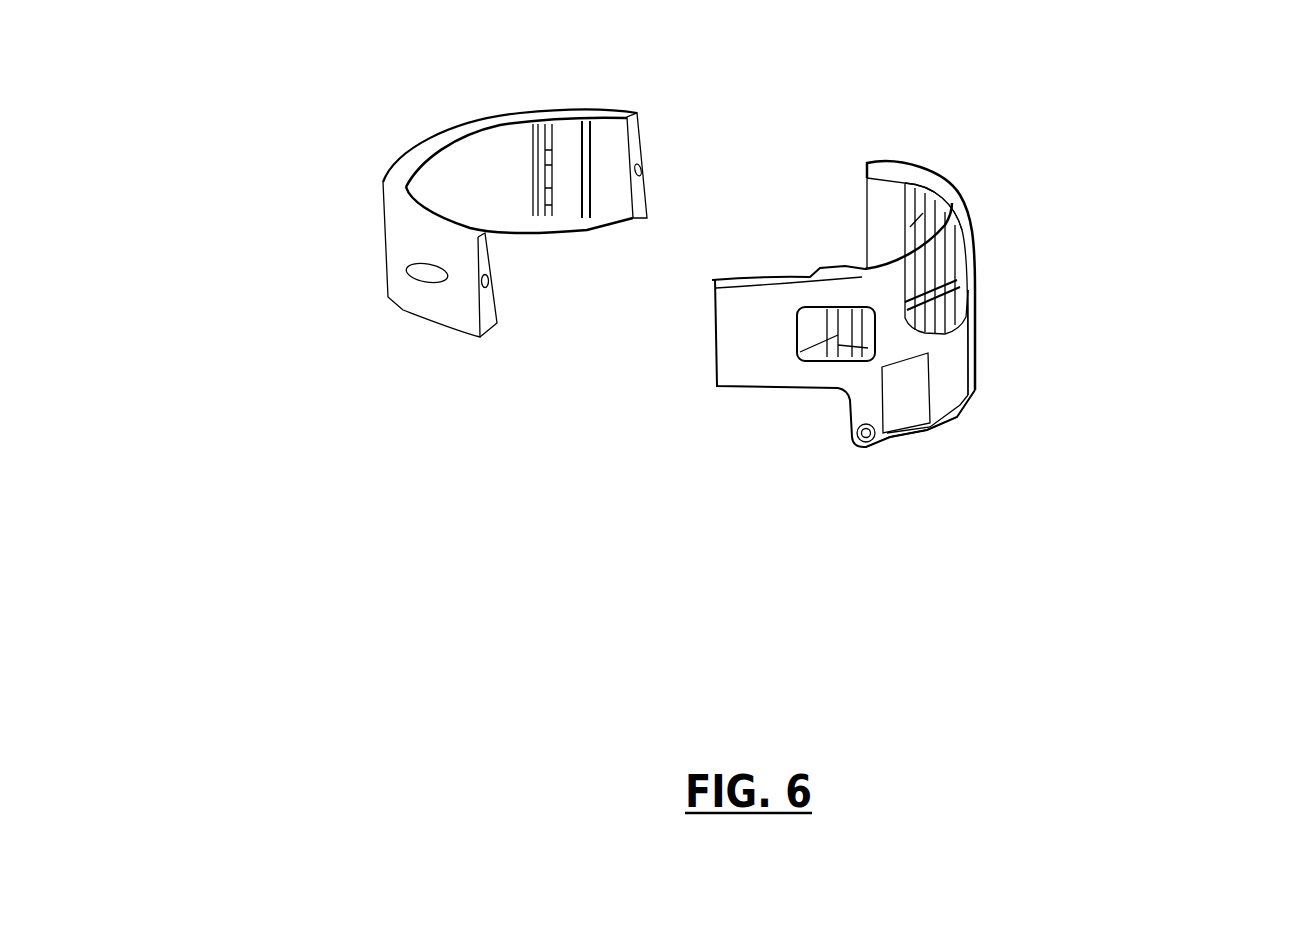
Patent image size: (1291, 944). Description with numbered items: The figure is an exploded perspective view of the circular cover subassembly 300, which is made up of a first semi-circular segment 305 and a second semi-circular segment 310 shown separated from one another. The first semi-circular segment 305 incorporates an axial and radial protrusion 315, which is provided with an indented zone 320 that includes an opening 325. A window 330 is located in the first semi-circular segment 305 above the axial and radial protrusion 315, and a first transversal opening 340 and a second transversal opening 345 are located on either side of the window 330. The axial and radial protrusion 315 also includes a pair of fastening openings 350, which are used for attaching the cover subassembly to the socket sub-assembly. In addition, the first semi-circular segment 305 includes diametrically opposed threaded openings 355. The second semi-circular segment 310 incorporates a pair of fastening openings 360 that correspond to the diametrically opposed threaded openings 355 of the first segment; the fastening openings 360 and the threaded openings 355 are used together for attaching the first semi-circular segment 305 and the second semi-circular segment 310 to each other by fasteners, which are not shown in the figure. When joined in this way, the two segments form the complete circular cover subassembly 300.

The circular cover subassembly 300 is at (320, 718).
The first semi-circular segment 305 is at (630, 550).
The second semi-circular segment 310 is at (352, 340).
The axial and radial protrusion 315 is at (930, 433).
The indented zone 320 is at (947, 377).
The opening 325 is at (947, 340).
The window 330 is at (973, 258).
The first transversal opening 340 is at (837, 343).
The second transversal opening 345 is at (935, 190).
The fastening openings 350 is at (864, 452).
The threaded openings 355 is at (708, 316).
The fastening openings 360 is at (636, 173).